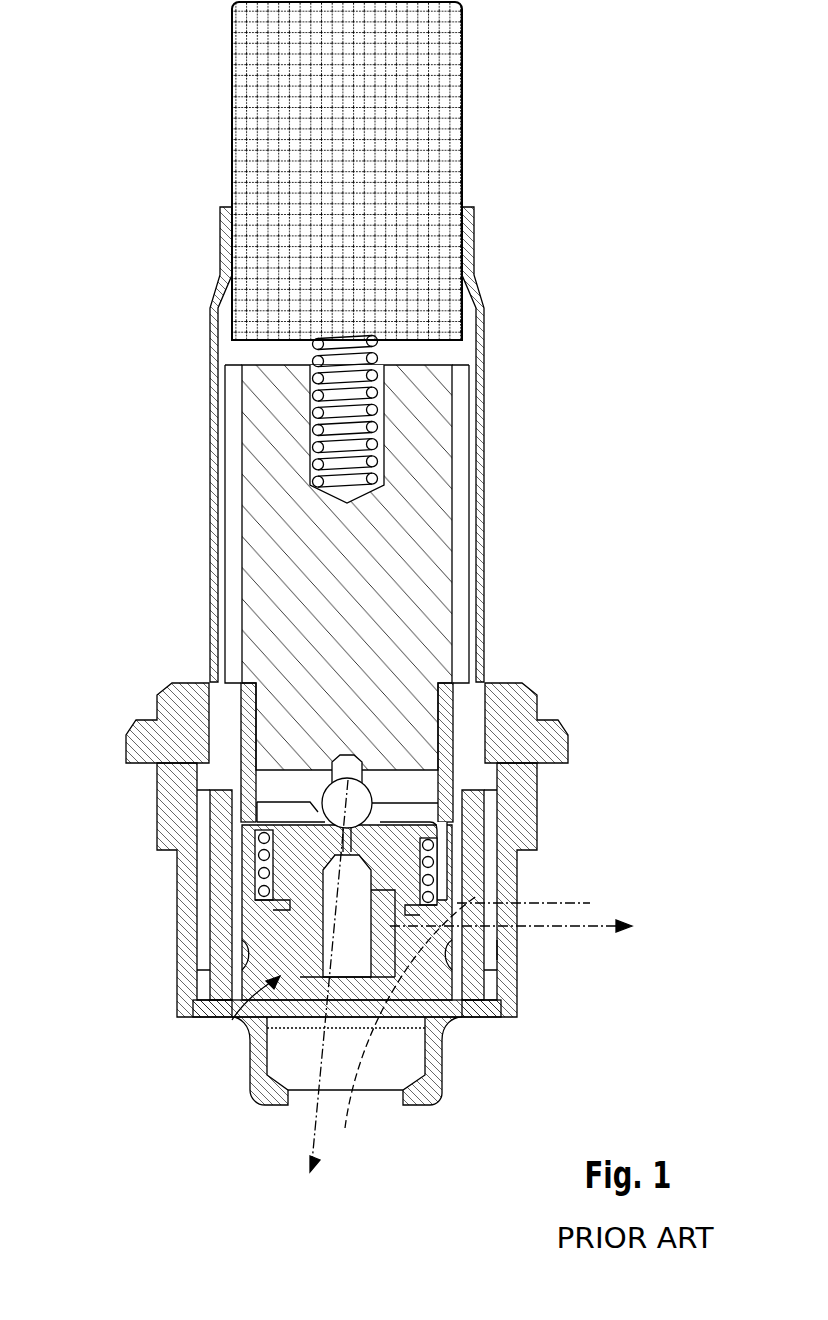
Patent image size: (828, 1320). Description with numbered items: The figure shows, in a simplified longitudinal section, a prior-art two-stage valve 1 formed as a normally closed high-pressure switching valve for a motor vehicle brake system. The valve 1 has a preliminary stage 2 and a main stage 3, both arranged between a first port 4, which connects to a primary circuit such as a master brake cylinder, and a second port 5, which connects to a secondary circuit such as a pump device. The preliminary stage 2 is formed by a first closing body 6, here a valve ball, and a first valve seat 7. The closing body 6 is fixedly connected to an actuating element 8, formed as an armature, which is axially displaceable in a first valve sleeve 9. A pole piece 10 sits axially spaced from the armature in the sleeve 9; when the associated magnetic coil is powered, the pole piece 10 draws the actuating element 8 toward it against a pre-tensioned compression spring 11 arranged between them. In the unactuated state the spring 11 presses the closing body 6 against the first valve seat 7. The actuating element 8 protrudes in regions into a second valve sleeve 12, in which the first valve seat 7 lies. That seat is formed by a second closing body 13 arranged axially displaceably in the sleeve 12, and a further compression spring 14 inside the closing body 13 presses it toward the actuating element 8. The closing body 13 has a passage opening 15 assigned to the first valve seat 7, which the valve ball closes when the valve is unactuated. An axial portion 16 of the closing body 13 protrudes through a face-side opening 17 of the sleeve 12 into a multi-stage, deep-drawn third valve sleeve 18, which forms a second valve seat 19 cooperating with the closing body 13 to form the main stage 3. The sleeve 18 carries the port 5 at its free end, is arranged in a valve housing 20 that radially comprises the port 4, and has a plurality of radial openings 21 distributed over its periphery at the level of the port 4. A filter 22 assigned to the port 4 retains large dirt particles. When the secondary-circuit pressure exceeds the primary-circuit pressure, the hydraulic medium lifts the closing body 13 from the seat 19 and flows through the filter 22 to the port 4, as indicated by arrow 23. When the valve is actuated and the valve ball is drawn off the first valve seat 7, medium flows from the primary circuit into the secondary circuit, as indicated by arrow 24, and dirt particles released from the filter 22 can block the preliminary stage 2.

The two-stage valve 1 is at (102, 133).
The preliminary stage 2 is at (284, 812).
The main stage 3 is at (233, 1020).
The first port 4 is at (507, 937).
The second port 5 is at (384, 1097).
The first closing body 6 is at (343, 800).
The first valve seat 7 is at (365, 815).
The actuating element 8 is at (400, 518).
The first valve sleeve 9 is at (478, 557).
The pole piece 10 is at (455, 85).
The compression spring 11 is at (378, 380).
The second valve sleeve 12 is at (255, 860).
The second closing body 13 is at (445, 903).
The further compression spring 14 is at (256, 876).
The passage opening 15 is at (420, 850).
The axial portion 16 is at (297, 930).
The face-side opening 17 is at (440, 880).
The third valve sleeve 18 is at (427, 1095).
The second valve seat 19 is at (277, 1003).
The valve housing 20 is at (508, 992).
The radial openings 21 is at (258, 963).
The filter 22 is at (490, 955).
The arrow 23 is at (348, 1125).
The arrow 24 is at (307, 1124).